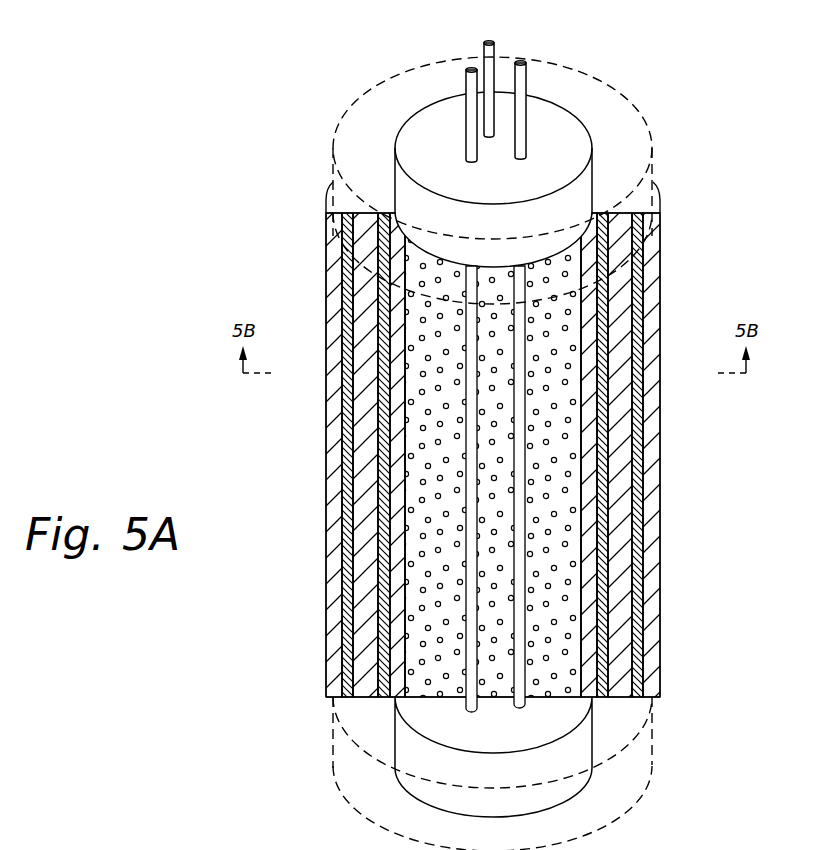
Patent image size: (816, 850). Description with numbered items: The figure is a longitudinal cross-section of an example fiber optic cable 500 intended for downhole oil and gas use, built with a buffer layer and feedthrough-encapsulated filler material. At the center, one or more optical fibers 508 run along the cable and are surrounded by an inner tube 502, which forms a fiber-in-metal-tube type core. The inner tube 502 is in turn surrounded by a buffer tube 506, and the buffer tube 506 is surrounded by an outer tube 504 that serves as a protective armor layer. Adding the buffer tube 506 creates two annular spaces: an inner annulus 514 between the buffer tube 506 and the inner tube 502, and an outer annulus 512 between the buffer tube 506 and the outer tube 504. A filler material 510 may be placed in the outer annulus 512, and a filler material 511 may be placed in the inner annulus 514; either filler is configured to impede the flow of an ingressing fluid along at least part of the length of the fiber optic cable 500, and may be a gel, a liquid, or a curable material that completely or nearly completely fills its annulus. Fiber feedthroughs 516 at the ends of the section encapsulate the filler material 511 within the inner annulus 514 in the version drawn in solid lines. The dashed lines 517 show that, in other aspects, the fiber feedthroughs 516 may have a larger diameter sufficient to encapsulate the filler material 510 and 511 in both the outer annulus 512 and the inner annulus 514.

The fiber optic cable 500 is at (247, 70).
The inner tube 502 is at (397, 598).
The outer tube 504 is at (337, 448).
The buffer tube 506 is at (357, 518).
The optical fibers 508 is at (490, 42).
The filler material 510 is at (638, 452).
The filler material 511 is at (598, 667).
The outer annulus 512 is at (655, 581).
The inner annulus 514 is at (612, 506).
The fiber feedthroughs 516 is at (563, 122).
The dashed lines 517 is at (653, 142).